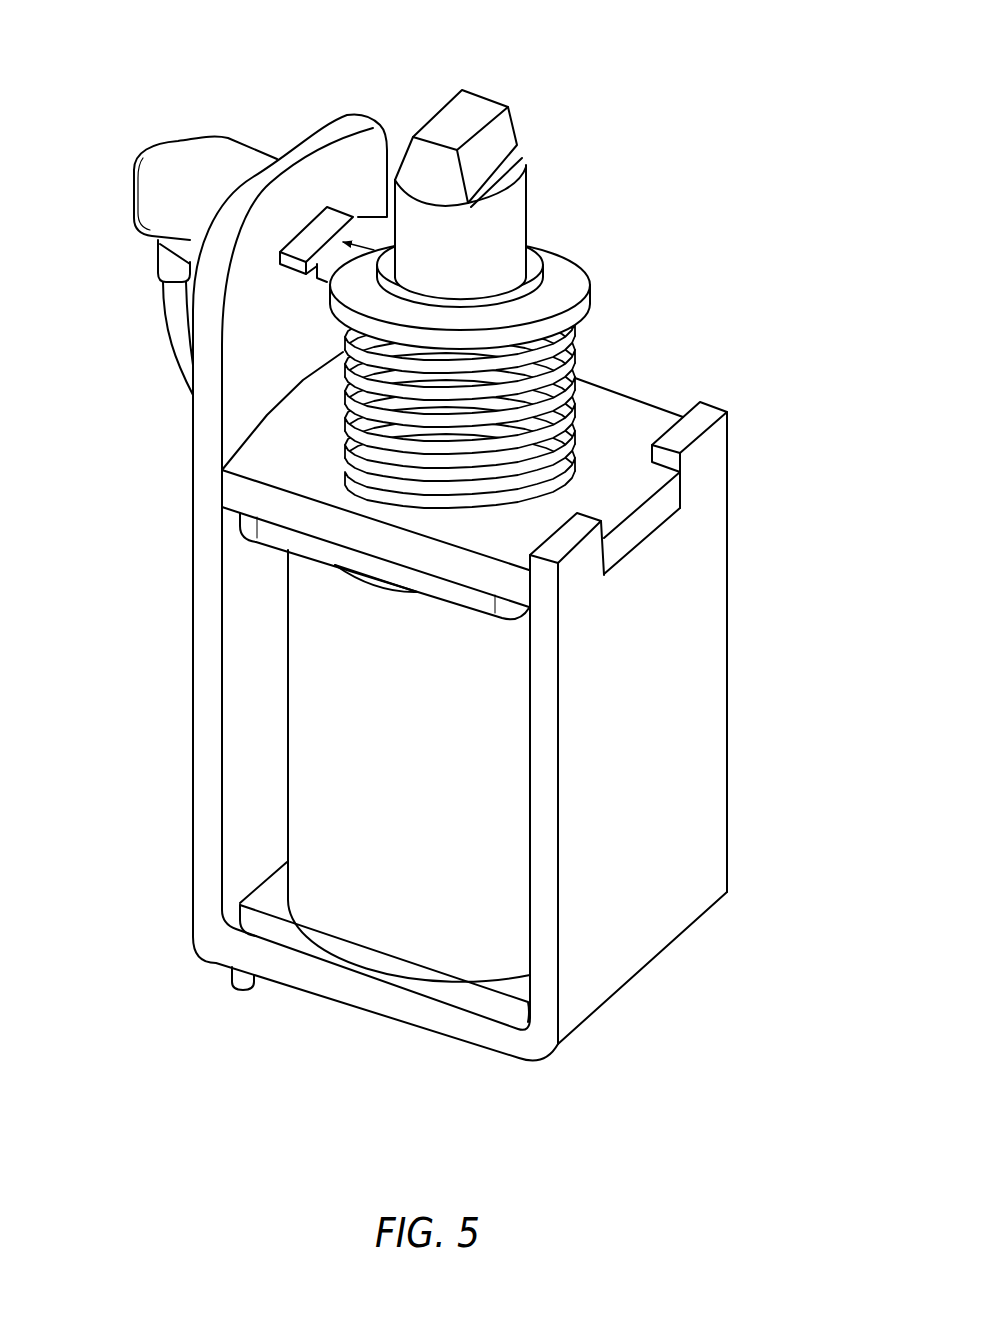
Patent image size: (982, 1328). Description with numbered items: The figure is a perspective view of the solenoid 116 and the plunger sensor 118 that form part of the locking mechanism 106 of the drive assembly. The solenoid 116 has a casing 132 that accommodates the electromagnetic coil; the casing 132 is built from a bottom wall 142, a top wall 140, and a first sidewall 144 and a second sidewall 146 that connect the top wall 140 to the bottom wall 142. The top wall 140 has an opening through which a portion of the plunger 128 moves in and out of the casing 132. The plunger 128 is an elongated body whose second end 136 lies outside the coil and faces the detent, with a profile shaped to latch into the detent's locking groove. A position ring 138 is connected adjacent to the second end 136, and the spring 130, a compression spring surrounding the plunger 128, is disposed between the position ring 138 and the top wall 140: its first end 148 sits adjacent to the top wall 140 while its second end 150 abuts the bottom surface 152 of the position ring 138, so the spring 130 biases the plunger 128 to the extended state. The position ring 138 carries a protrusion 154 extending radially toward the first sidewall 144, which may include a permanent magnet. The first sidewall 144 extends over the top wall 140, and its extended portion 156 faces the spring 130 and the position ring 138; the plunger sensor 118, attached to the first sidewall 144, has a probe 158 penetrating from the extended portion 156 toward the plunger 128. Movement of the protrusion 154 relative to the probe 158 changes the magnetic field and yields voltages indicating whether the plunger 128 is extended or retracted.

The locking mechanism 106 is at (432, 534).
The solenoid 116 is at (387, 528).
The plunger sensor 118 is at (126, 182).
The plunger 128 is at (511, 226).
The spring 130 is at (569, 347).
The casing 132 is at (445, 689).
The second end 136 is at (423, 158).
The position ring 138 is at (424, 274).
The top wall 140 is at (243, 498).
The bottom wall 142 is at (322, 983).
The first sidewall 144 is at (191, 734).
The second sidewall 146 is at (548, 880).
The first end 148 is at (543, 478).
The second end 150 is at (445, 397).
The bottom surface 152 is at (330, 300).
The protrusion 154 is at (367, 227).
The extended portion 156 is at (251, 265).
The probe 158 is at (323, 227).